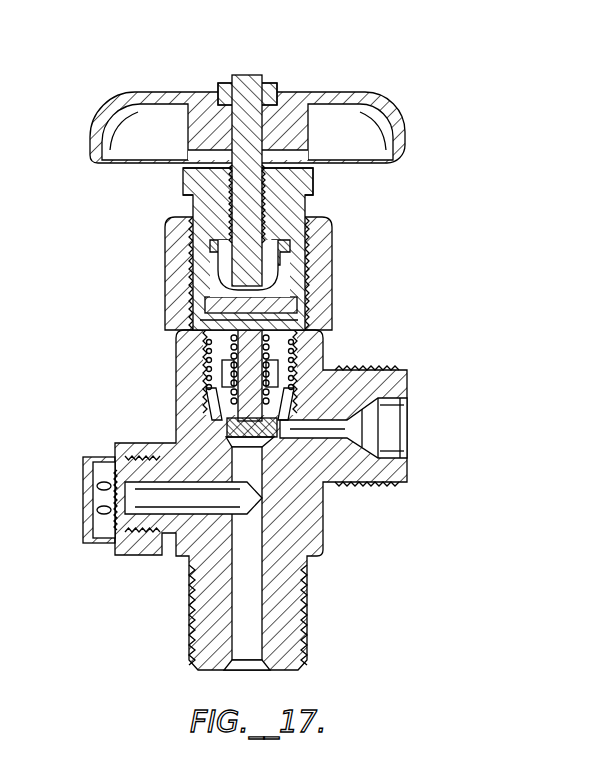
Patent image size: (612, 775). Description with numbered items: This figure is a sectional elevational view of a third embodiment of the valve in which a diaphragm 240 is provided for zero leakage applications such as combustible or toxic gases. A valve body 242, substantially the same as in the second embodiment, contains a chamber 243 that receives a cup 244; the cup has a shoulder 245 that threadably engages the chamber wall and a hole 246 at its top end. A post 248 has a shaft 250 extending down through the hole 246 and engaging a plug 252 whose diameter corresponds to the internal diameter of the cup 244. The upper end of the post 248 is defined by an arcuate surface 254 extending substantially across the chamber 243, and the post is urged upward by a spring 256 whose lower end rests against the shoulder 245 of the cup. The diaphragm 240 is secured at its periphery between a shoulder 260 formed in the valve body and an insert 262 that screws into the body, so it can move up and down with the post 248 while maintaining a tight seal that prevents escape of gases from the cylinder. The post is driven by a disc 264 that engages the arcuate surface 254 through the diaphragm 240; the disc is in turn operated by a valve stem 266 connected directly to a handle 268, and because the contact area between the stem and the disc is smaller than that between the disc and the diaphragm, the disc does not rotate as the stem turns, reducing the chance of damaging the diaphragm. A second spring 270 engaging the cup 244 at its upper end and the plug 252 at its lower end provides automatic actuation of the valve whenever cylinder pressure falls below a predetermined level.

The diaphragm 240 is at (337, 283).
The valve body 242 is at (443, 161).
The chamber 243 is at (330, 310).
The cup 244 is at (325, 365).
The shoulder 245 is at (408, 388).
The hole 246 is at (205, 386).
The post 248 is at (205, 338).
The shaft 250 is at (320, 345).
The plug 252 is at (318, 445).
The arcuate surface 254 is at (305, 262).
The spring 256 is at (205, 362).
The shoulder 260 is at (205, 320).
The insert 262 is at (195, 203).
The disc 264 is at (215, 278).
The valve stem 266 is at (240, 182).
The handle 268 is at (370, 96).
The spring 270 is at (205, 408).